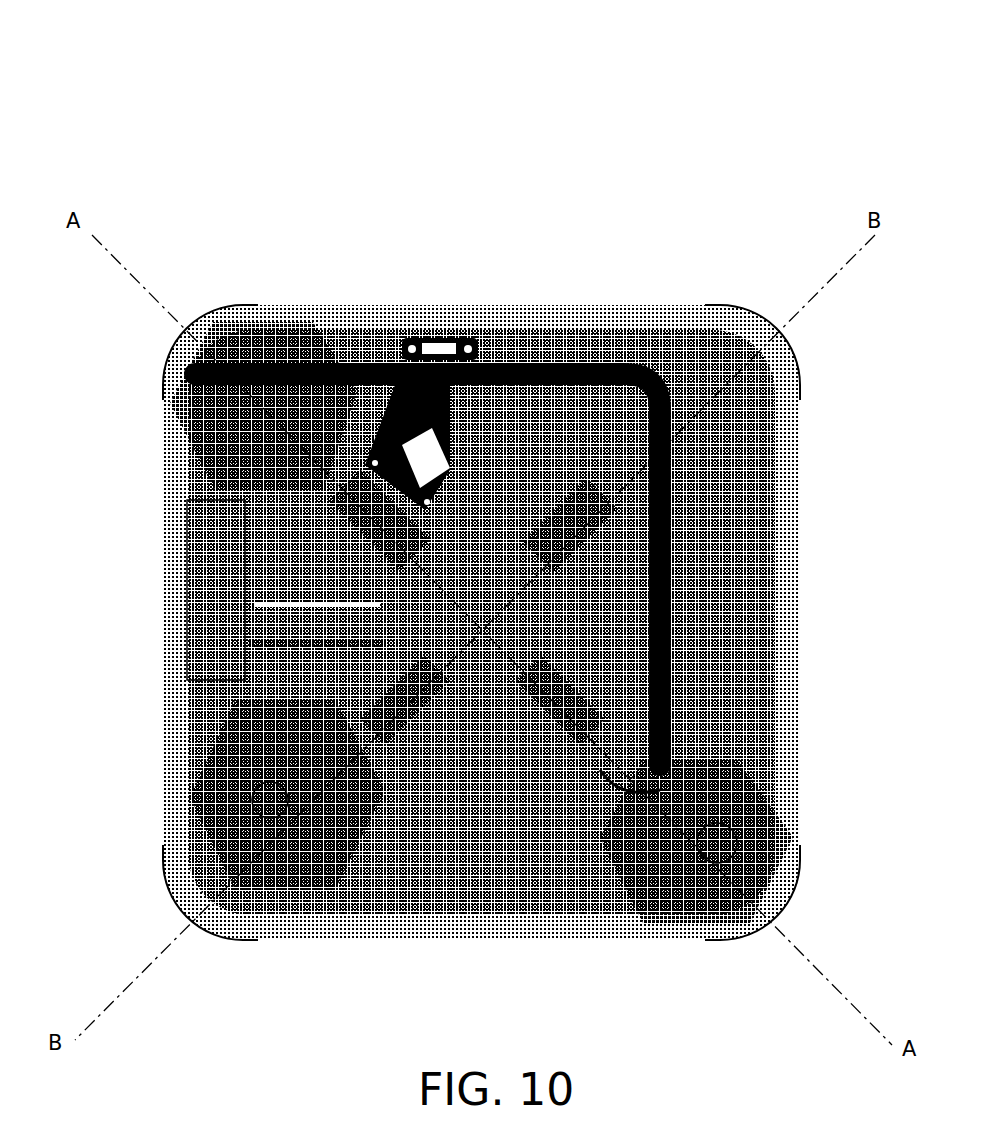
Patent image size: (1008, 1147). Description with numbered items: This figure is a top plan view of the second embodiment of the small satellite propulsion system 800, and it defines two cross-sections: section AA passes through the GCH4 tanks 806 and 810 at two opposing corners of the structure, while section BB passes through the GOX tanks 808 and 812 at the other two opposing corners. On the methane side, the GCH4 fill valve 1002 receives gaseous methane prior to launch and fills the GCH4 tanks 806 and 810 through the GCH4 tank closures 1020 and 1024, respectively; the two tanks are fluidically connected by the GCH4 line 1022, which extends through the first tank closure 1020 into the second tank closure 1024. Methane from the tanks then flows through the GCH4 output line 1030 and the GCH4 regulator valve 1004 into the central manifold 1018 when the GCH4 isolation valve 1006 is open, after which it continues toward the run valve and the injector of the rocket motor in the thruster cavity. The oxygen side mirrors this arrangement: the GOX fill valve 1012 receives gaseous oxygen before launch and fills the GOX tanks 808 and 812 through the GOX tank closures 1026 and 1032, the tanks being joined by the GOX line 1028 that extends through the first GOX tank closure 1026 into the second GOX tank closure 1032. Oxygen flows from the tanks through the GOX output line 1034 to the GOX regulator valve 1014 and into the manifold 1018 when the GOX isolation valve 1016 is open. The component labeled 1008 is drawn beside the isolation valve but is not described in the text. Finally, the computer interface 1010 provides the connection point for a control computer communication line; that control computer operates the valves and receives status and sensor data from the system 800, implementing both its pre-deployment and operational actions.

The small satellite propulsion system 800 is at (136, 31).
The GCH4 tank 806 is at (142, 319).
The GOX tank 808 is at (708, 280).
The GCH4 tank 810 is at (812, 893).
The GOX tank 812 is at (156, 904).
The GCH4 fill valve 1002 is at (210, 405).
The GCH4 regulator valve 1004 is at (385, 548).
The GCH4 isolation valve 1006 is at (260, 633).
The cylinder mount 1008 is at (265, 575).
The computer interface 1010 is at (385, 420).
The GOX fill valve 1012 is at (605, 415).
The GOX regulator valve 1014 is at (585, 540).
The GOX isolation valve 1016 is at (478, 432).
The manifold 1018 is at (545, 645).
The GCH4 tank closure 1020 is at (295, 335).
The GCH4 line 1022 is at (355, 370).
The GCH4 tank closure 1024 is at (745, 800).
The GOX tank closure 1026 is at (720, 415).
The GOX line 1028 is at (610, 795).
The GCH4 output line 1030 is at (330, 490).
The GOX tank closure 1032 is at (215, 800).
The GOX output line 1034 is at (625, 483).